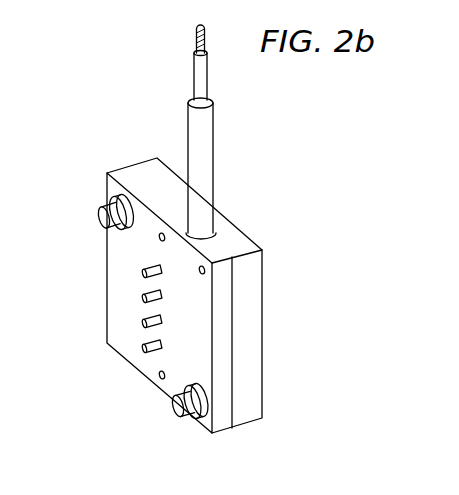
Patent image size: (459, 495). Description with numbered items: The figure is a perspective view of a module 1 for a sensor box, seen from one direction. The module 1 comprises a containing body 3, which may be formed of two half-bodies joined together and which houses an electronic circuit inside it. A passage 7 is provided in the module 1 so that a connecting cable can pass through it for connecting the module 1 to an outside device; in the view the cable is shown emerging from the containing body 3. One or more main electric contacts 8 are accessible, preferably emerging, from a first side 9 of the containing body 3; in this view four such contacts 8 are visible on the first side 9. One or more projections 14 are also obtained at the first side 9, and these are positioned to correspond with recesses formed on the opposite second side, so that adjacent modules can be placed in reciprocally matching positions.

The module 1 is at (104, 388).
The containing body 3 is at (188, 226).
The passage 7 is at (214, 219).
The main electric contacts 8 is at (148, 347).
The first side 9 is at (112, 248).
The projections 14 is at (100, 215).